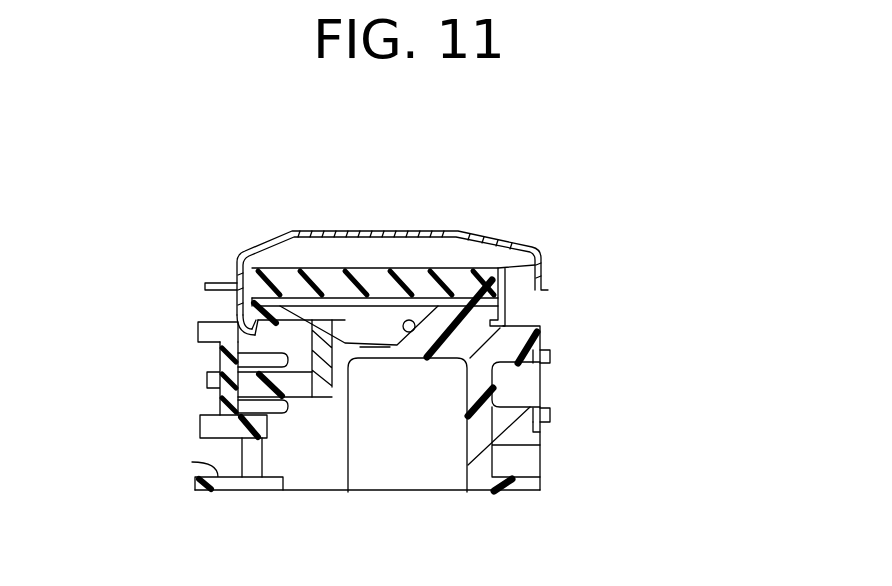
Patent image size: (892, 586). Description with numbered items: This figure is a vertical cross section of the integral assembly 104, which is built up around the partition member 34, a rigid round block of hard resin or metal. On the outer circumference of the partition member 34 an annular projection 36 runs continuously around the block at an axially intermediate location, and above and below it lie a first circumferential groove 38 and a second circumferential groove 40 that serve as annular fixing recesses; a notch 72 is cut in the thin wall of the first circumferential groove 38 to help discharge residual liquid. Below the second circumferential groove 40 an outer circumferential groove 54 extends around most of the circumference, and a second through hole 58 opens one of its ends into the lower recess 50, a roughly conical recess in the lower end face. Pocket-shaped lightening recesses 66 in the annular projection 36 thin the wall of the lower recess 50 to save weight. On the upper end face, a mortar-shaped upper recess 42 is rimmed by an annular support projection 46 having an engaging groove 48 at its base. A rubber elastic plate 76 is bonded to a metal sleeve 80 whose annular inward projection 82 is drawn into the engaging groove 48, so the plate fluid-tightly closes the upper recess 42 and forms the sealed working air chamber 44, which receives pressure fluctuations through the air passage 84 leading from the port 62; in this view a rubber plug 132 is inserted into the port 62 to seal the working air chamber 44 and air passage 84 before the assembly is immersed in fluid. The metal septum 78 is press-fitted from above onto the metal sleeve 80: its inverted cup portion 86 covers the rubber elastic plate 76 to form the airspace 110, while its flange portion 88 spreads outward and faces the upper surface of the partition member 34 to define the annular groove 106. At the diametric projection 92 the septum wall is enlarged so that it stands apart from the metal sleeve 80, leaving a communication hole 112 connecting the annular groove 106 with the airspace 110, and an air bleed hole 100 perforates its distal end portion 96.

The integral assembly 104 is at (537, 165).
The metal septum 78 is at (323, 230).
The inverted cup portion 86 is at (282, 232).
The flange portion 88 is at (208, 283).
The communication hole 112 is at (503, 252).
The diametric projection 92 is at (537, 254).
The diametric projecting distal end portion 96 is at (542, 262).
The air bleed hole 100 is at (543, 272).
The metal sleeve 80 is at (503, 309).
The rubber elastic plate 76 is at (413, 288).
The working air chamber 44 is at (348, 322).
The airspace 110 is at (400, 280).
The annular support projection 46 is at (480, 300).
The air passage 84 is at (340, 398).
The upper recess 42 is at (416, 332).
The lower recess 50 is at (466, 430).
The partition member 34 is at (547, 329).
The first circumferential groove 38 is at (550, 352).
The notch 72 is at (552, 361).
The annular inward projection 82 is at (515, 365).
The lightening recess 66 is at (537, 398).
The annular projection 36 is at (551, 416).
The second circumferential groove 40 is at (542, 428).
The annular groove 106 is at (228, 315).
The engaging groove 48 is at (240, 355).
The rubber plug 132 is at (222, 384).
The second through hole 58 is at (322, 380).
The port 62 is at (333, 352).
The outer circumferential groove 54 is at (218, 478).